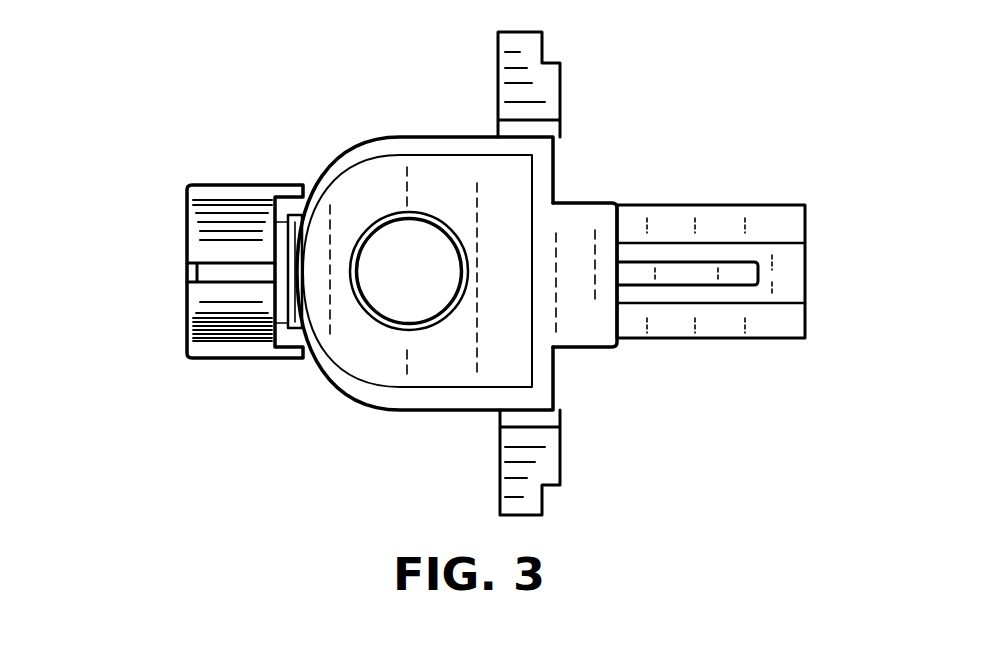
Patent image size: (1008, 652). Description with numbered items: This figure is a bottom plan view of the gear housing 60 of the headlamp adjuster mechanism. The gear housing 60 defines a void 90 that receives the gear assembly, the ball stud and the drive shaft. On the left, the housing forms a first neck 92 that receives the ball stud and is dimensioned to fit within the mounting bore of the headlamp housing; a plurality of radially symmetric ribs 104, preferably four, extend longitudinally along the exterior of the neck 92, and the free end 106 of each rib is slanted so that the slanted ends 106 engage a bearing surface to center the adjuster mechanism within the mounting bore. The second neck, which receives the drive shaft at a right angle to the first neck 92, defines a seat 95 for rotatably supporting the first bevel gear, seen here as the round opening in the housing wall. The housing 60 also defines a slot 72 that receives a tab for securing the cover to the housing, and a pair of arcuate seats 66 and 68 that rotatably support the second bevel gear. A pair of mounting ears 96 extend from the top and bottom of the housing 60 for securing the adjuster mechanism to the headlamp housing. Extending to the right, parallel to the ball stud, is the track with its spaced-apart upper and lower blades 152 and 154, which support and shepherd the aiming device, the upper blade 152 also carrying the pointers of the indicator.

The gear housing 60 is at (349, 135).
The void 90 is at (440, 178).
The arcuate seat 66 is at (303, 237).
The seat 95 is at (453, 230).
The slot 72 is at (311, 364).
The ribs 104 is at (219, 193).
The first neck 92 is at (187, 311).
The slanted free end 106 is at (188, 185).
The arcuate seat 68 is at (598, 322).
The upper blade 152 is at (732, 218).
The lower blade 154 is at (785, 283).
The mounting ears 96 is at (561, 85).